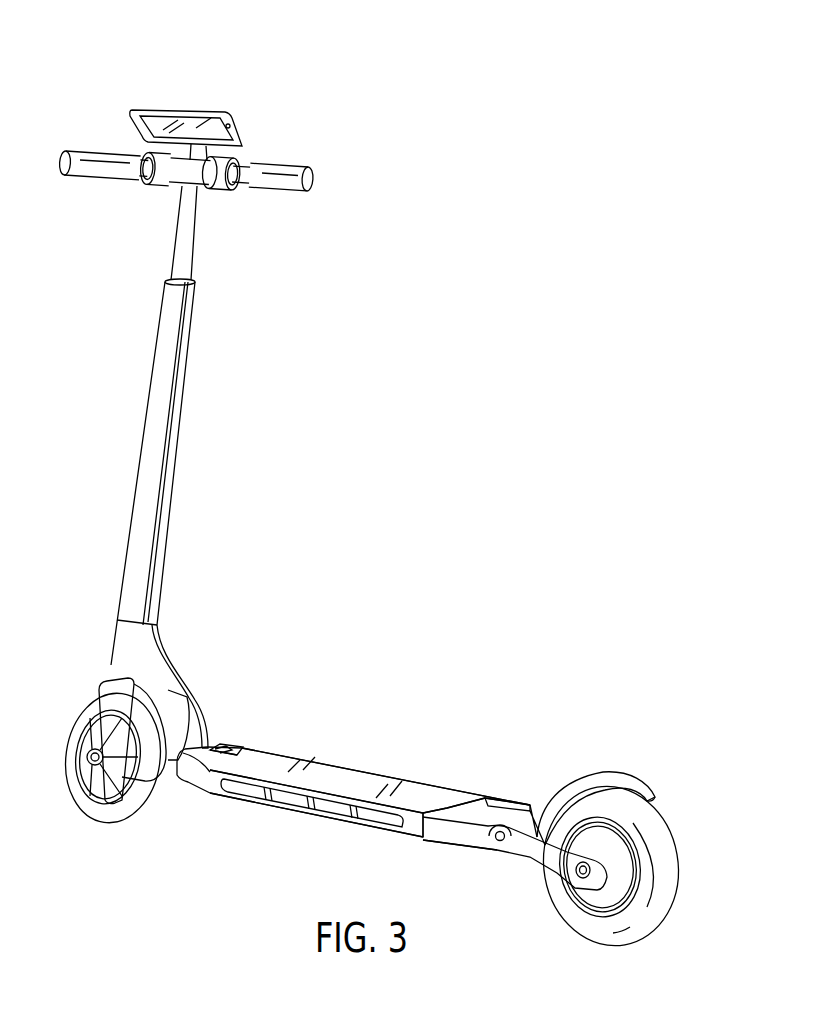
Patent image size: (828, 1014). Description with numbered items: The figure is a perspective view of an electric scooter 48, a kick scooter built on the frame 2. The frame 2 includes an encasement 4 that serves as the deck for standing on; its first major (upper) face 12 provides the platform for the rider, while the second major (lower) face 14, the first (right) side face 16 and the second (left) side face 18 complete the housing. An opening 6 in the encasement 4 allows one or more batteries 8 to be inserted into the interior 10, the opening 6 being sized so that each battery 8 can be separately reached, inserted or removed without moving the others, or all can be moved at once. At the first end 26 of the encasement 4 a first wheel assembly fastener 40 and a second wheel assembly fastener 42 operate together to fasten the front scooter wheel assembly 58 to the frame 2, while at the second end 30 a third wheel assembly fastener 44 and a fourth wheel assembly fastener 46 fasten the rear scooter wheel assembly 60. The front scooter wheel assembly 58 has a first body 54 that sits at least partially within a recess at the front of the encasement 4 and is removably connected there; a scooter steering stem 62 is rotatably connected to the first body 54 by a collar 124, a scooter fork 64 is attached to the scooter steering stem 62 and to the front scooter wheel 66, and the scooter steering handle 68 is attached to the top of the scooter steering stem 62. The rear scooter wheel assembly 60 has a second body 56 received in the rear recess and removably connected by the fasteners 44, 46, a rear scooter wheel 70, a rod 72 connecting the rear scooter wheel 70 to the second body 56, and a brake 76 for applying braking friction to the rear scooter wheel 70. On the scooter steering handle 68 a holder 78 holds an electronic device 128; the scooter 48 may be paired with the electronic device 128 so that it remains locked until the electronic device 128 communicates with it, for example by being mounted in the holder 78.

The frame 2 is at (403, 712).
The encasement 4 is at (333, 770).
The opening 6 is at (253, 792).
The batteries 8 is at (290, 800).
The interior 10 is at (390, 833).
The first major (upper) face 12 is at (417, 783).
The second major (lower) face 14 is at (380, 835).
The first (right) side face 16 is at (368, 763).
The second (left) side face 18 is at (410, 827).
The first end 26 is at (232, 757).
The second end 30 is at (443, 800).
The first wheel assembly fastener 40 is at (245, 753).
The second wheel assembly fastener 42 is at (187, 777).
The third wheel assembly fastener 44 is at (518, 803).
The fourth wheel assembly fastener 46 is at (468, 838).
The electric scooter 48 is at (562, 663).
The first body 54 is at (222, 745).
The second body 56 is at (480, 800).
The front scooter wheel assembly 58 is at (72, 648).
The rear scooter wheel assembly 60 is at (717, 840).
The scooter steering stem 62 is at (135, 575).
The scooter fork 64 is at (98, 737).
The front scooter wheel 66 is at (97, 805).
The scooter steering handle 68 is at (108, 160).
The rear scooter wheel 70 is at (673, 863).
The rod 72 is at (560, 867).
The brake 76 is at (613, 775).
The holder 78 is at (203, 173).
The collar 124 is at (153, 678).
The electronic device 128 is at (173, 120).